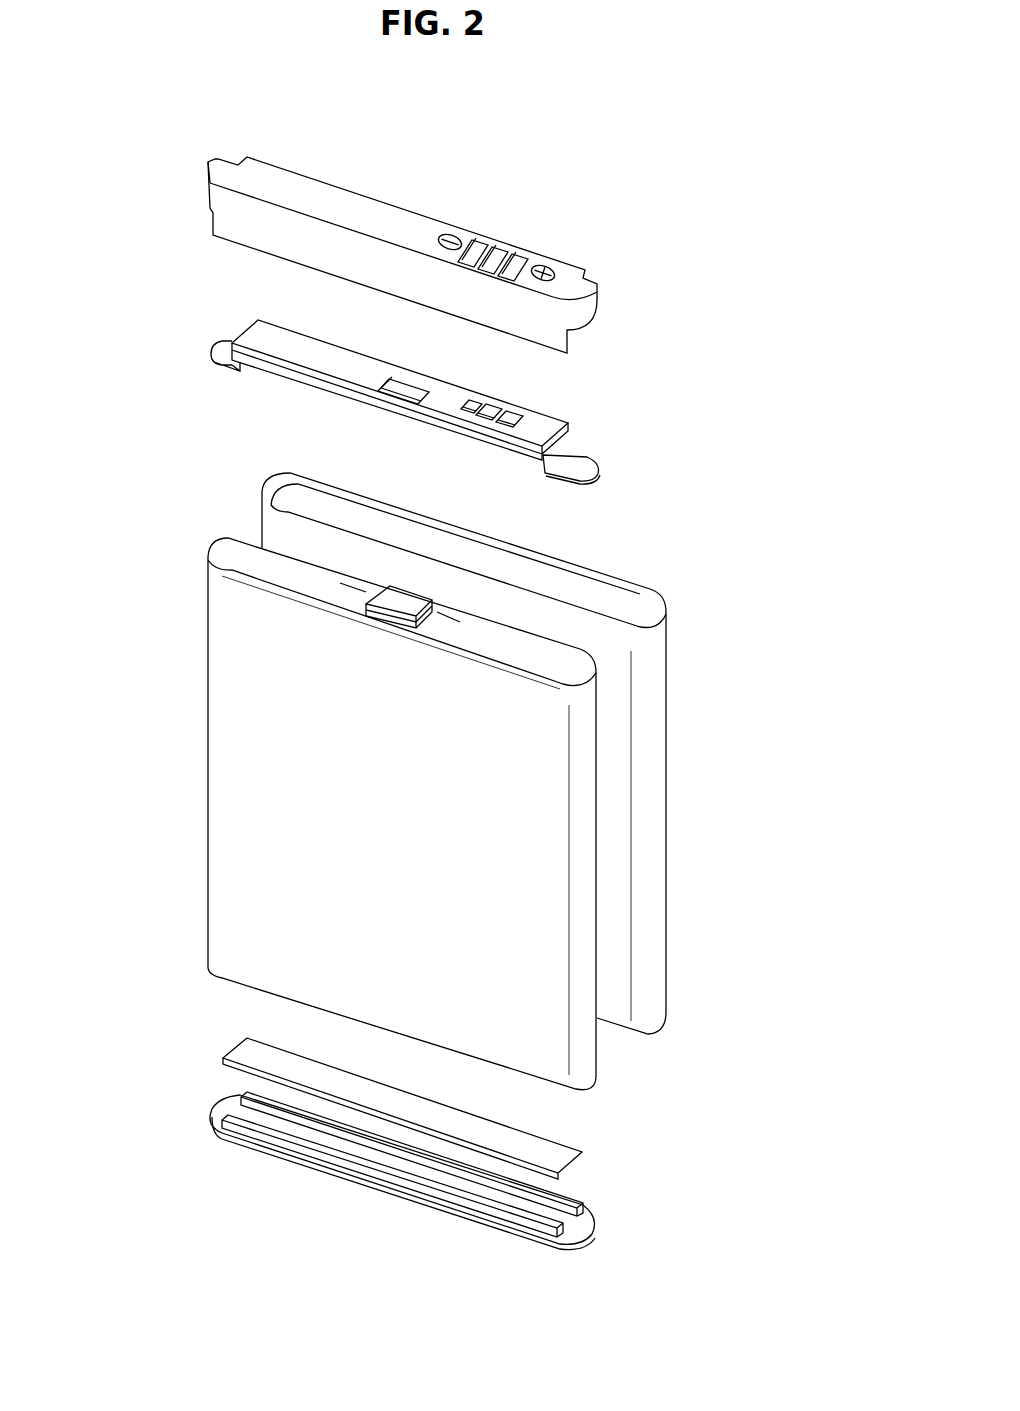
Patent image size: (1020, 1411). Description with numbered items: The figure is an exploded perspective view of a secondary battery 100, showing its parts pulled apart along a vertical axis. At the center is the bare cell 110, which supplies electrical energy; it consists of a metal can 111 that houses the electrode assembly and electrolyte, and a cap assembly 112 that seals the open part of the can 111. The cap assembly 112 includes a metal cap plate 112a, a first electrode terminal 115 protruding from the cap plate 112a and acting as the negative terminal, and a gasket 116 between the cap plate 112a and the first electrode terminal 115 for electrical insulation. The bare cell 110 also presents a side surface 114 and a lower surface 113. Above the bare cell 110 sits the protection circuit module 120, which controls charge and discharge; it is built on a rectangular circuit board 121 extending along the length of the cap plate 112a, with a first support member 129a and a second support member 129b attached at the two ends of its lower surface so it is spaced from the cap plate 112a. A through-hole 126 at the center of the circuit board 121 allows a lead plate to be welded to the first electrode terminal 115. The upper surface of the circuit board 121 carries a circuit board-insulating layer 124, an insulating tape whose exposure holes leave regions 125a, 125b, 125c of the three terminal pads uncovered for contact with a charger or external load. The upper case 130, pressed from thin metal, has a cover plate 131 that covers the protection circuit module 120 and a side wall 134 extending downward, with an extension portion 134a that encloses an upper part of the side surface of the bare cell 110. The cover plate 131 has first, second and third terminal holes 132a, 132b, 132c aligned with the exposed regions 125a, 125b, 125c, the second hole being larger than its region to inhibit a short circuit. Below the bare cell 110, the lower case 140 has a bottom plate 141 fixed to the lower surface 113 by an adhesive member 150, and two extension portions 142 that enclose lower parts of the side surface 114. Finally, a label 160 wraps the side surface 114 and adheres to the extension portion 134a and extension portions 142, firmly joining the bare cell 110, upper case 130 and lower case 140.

The secondary battery 100 is at (667, 148).
The bare cell 110 is at (396, 804).
The can 111 is at (270, 847).
The cap assembly 112 is at (227, 573).
The cap plate 112a is at (217, 548).
The lower surface 113 is at (585, 1092).
The side surface 114 is at (215, 798).
The first electrode terminal 115 is at (405, 612).
The gasket 116 is at (366, 614).
The protection circuit module 120 is at (401, 386).
The circuit board 121 is at (569, 430).
The circuit board-insulating layer 124 is at (300, 358).
The exposure region of first terminal pad 125a is at (513, 408).
The exposure region of second terminal pad 125b is at (472, 402).
The exposure region of third terminal pad 125c is at (492, 404).
The through-hole 126 is at (393, 380).
The first support member 129a is at (218, 355).
The second support member 129b is at (587, 467).
The upper case 130 is at (373, 247).
The cover plate 131 is at (340, 198).
The first terminal hole 132a is at (525, 260).
The second terminal hole 132b is at (483, 247).
The third terminal hole 132c is at (502, 253).
The side wall 134 is at (217, 198).
The extension portion 134a is at (302, 253).
The lower case 140 is at (400, 1153).
The bottom plate 141 is at (593, 1233).
The extension portions 142 is at (318, 1122).
The adhesive member 150 is at (567, 1157).
The label 160 is at (651, 798).